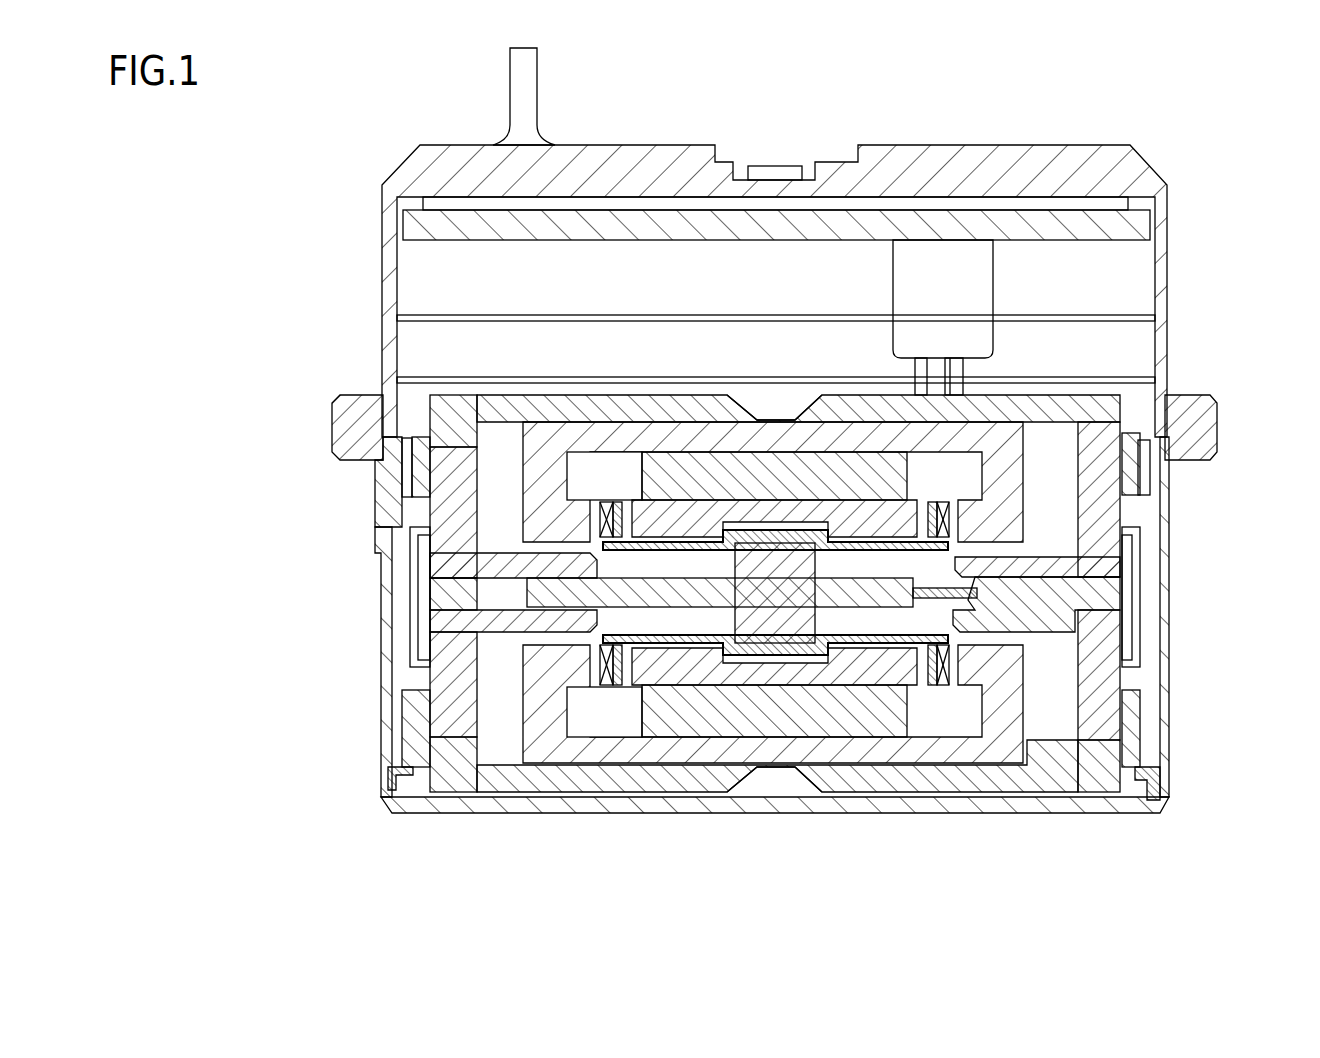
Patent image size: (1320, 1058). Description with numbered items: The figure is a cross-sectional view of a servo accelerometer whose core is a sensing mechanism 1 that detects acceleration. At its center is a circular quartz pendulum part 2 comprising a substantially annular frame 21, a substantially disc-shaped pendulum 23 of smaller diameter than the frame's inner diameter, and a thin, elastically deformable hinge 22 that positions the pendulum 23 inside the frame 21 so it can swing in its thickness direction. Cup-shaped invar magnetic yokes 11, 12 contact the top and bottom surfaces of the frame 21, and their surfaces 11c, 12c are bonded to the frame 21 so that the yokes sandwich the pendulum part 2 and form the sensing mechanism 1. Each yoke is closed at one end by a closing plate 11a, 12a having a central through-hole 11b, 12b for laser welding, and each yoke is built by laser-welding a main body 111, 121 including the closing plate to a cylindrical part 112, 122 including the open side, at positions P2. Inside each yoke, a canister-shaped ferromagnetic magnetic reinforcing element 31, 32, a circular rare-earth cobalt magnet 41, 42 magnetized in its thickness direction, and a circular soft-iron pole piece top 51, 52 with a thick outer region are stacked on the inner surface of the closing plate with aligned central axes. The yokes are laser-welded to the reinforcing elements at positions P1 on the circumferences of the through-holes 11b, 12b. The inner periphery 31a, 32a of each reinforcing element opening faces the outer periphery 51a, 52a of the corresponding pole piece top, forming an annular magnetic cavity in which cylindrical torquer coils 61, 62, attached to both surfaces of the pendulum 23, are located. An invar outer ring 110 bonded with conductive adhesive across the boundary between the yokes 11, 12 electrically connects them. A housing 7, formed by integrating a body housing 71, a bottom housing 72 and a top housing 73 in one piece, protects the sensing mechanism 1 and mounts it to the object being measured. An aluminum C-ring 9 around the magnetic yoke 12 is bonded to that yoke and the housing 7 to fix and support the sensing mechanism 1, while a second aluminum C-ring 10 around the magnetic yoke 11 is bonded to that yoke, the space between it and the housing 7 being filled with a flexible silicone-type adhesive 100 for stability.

The sensing mechanism 1 is at (1087, 400).
The pendulum part 2 is at (1163, 645).
The housing 7 is at (1093, 153).
The C-ring 9 is at (412, 747).
The C-ring 10 is at (392, 482).
The magnetic yoke 11 is at (1123, 403).
The closing plate 11a is at (1018, 410).
The through-hole 11b is at (787, 419).
The surface 11c is at (1060, 600).
The magnetic yoke 12 is at (1107, 715).
The closing plate 12a is at (1047, 778).
The through-hole 12b is at (790, 769).
The surface 12c is at (1060, 622).
The frame 21 is at (545, 595).
The hinge 22 is at (971, 603).
The pendulum 23 is at (697, 597).
The magnetic reinforcing element 31 is at (1015, 462).
The inner periphery 31a is at (607, 500).
The magnetic reinforcing element 32 is at (1015, 677).
The inner periphery 32a is at (597, 688).
The magnet 41 is at (897, 478).
The magnet 42 is at (892, 722).
The pole piece top 51 is at (955, 510).
The outer periphery 51a is at (620, 500).
The pole piece top 52 is at (867, 670).
The outer periphery 52a is at (625, 682).
The torquer coil 61 is at (603, 508).
The torquer coil 62 is at (603, 667).
The body housing 71 is at (385, 730).
The bottom housing 72 is at (462, 807).
The top housing 73 is at (925, 162).
The flexible adhesive 100 is at (395, 403).
The outer ring 110 is at (412, 575).
The main body 111 is at (453, 403).
The cylindrical part 112 is at (425, 488).
The main body 121 is at (503, 780).
The cylindrical part 122 is at (443, 684).
The laser welding positions P1 is at (788, 418).
The laser welding positions P2 is at (407, 460).